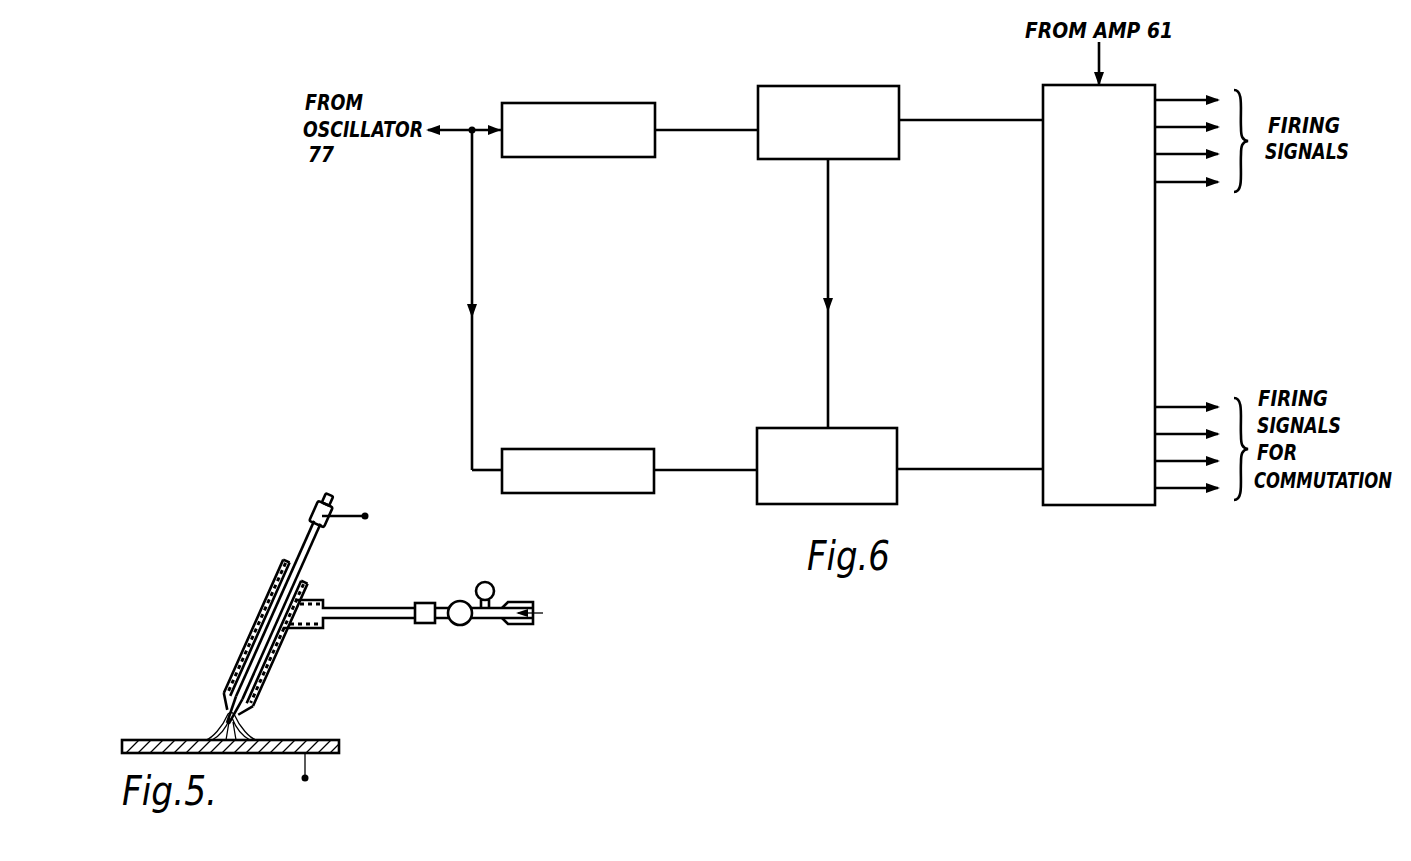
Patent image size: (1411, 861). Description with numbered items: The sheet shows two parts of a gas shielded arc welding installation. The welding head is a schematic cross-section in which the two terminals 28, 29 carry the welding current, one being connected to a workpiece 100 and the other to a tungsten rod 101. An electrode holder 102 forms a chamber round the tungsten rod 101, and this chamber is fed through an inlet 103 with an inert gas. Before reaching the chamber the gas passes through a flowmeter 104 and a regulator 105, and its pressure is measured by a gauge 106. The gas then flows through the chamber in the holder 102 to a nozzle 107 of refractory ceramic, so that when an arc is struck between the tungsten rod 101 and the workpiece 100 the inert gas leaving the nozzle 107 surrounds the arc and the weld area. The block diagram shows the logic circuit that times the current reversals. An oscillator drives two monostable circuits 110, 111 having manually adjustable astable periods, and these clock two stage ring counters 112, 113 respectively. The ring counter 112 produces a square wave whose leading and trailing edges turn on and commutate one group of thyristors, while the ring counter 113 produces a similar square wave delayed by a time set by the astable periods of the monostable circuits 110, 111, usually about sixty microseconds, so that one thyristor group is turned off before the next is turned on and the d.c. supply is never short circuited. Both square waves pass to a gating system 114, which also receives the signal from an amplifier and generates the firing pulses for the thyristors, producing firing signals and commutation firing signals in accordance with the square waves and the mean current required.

In FIG. 5, the terminal 28 is at (365, 516).
In FIG. 5, the terminal 29 is at (329, 773).
In FIG. 5, the workpiece 100 is at (308, 740).
In FIG. 5, the tungsten rod 101 is at (279, 609).
In FIG. 5, the electrode holder 102 is at (265, 639).
In FIG. 5, the inlet 103 is at (520, 625).
In FIG. 5, the flowmeter 104 is at (421, 624).
In FIG. 5, the regulator 105 is at (460, 625).
In FIG. 5, the gauge 106 is at (487, 582).
In FIG. 5, the nozzle 107 is at (224, 706).
In FIG. 6, the monostable circuit 110 is at (640, 103).
In FIG. 6, the monostable circuit 111 is at (645, 449).
In FIG. 6, the ring counter 112 is at (899, 103).
In FIG. 6, the ring counter 113 is at (874, 428).
In FIG. 6, the gating system 114 is at (1043, 176).